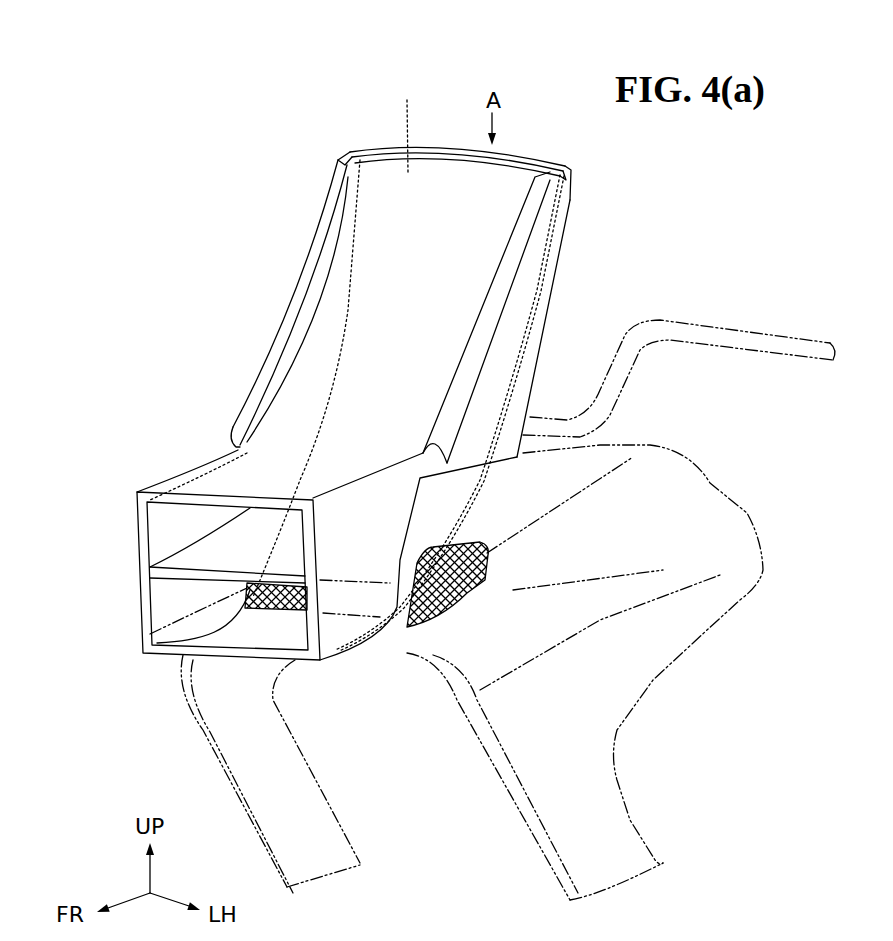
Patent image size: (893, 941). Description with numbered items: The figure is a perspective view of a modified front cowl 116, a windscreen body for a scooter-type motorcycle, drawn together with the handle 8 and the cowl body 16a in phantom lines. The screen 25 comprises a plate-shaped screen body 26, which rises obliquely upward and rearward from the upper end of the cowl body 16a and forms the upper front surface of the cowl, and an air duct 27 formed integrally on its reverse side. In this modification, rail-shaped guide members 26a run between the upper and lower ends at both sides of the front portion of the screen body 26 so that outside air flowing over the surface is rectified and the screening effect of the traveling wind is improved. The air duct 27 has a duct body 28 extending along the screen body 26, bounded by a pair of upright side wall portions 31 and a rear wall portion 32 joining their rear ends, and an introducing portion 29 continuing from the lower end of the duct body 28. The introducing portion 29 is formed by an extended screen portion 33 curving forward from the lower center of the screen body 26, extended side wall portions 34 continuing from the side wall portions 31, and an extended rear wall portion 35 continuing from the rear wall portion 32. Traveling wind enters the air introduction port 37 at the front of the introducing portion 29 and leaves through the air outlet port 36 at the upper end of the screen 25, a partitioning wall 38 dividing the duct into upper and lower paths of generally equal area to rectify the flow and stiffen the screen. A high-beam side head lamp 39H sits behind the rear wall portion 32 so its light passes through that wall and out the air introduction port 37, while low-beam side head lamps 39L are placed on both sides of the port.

The front cowl 116 is at (182, 223).
The screen 25 is at (303, 188).
The screen body 26 is at (377, 272).
The guide members 26a is at (300, 282).
The air duct 27 is at (504, 454).
The duct body 28 is at (532, 283).
The introducing portion 29 is at (360, 638).
The side wall portions 31 is at (322, 350).
The rear wall portion 32 is at (437, 358).
The extended screen portion 33 is at (220, 485).
The extended side wall portions 34 is at (178, 595).
The extended rear wall portion 35 is at (260, 640).
The air outlet port 36 is at (407, 121).
The air introduction port 37 is at (230, 632).
The partitioning wall 38 is at (183, 562).
The high-beam side head lamp 39H is at (150, 633).
The low-beam side head lamps 39L is at (457, 607).
The handle 8 is at (763, 330).
The cowl body 16a is at (707, 473).